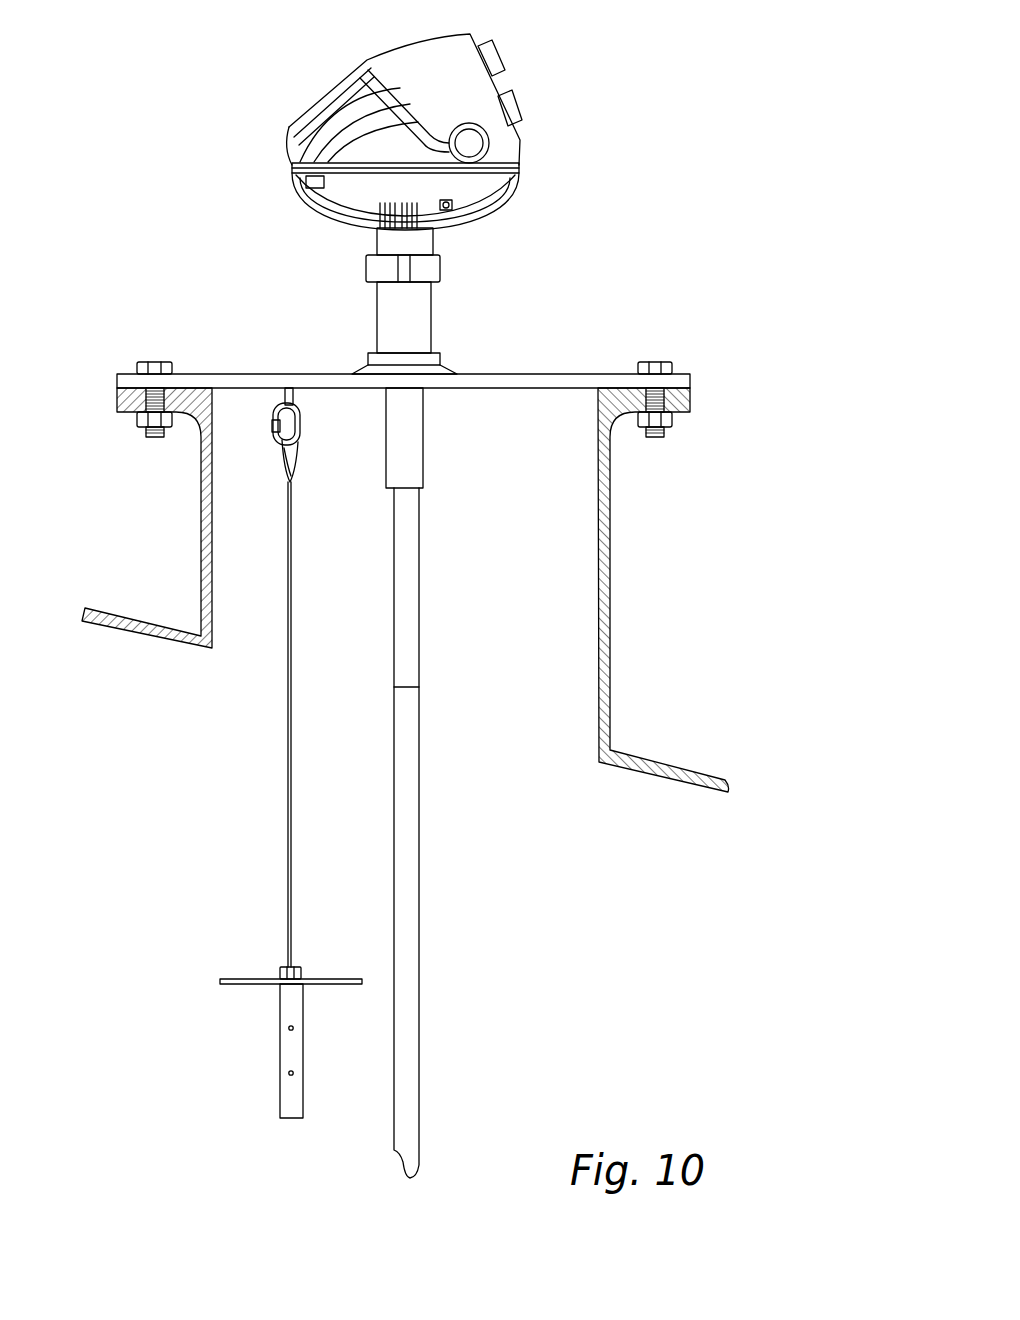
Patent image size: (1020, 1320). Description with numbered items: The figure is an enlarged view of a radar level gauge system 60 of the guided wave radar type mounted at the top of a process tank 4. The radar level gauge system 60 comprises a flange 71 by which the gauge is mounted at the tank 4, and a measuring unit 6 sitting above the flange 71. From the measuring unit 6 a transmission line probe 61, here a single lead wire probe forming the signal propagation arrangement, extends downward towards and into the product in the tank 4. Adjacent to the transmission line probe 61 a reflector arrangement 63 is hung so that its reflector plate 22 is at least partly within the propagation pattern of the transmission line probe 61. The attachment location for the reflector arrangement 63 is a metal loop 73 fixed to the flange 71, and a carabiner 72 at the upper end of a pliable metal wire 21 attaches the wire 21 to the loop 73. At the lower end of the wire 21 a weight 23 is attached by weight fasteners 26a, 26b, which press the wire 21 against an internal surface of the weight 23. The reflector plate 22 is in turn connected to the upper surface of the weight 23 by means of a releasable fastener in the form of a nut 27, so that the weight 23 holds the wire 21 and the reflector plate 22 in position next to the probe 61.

The radar level gauge system 60 is at (618, 245).
The measuring unit 6 is at (482, 203).
The flange 71 is at (537, 389).
The tank 4 is at (662, 762).
The transmission line probe 61 is at (421, 797).
The reflector arrangement 63 is at (244, 748).
The metal loop 73 is at (295, 401).
The carabiner 72 is at (280, 440).
The pliable metal wire 21 is at (292, 660).
The nut 27 is at (300, 968).
The reflector plate 22 is at (240, 978).
The weight 23 is at (287, 1013).
The weight fastener 26a is at (295, 1028).
The weight fastener 26b is at (295, 1073).